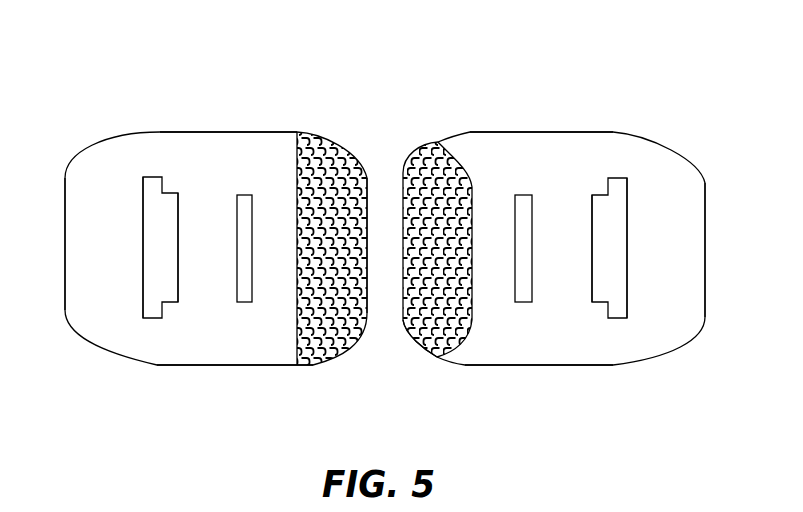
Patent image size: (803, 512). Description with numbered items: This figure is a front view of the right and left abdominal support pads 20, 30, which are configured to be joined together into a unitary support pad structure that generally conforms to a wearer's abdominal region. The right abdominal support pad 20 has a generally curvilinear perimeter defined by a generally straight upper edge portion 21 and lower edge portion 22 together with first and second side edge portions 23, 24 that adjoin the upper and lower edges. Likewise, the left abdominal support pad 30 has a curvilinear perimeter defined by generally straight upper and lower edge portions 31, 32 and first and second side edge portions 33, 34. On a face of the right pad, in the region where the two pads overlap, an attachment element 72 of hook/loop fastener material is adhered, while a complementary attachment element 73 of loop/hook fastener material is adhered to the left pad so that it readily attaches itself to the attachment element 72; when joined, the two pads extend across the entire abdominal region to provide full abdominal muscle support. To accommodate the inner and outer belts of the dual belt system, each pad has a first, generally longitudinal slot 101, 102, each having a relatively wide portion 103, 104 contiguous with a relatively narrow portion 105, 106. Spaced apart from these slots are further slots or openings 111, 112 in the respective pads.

The right abdominal support pad 20 is at (201, 112).
The upper edge portion 21 is at (248, 131).
The lower edge portion 22 is at (217, 366).
The first side edge portion 23 is at (63, 237).
The second side edge portion 24 is at (366, 178).
The attachment element 72 is at (324, 146).
The longitudinal slot 101 is at (183, 167).
The relatively wide portion 103 is at (152, 253).
The relatively narrow portion 105 is at (172, 273).
The further slot 111 is at (240, 194).
The left abdominal support pad 30 is at (542, 110).
The upper edge portion 31 is at (602, 131).
The lower edge portion 32 is at (547, 366).
The first side edge portion 33 is at (410, 338).
The second side edge portion 34 is at (706, 257).
The attachment element 73 is at (437, 153).
The longitudinal slot 102 is at (617, 178).
The relatively wide portion 104 is at (622, 243).
The relatively narrow portion 106 is at (596, 265).
The further slot 112 is at (520, 195).